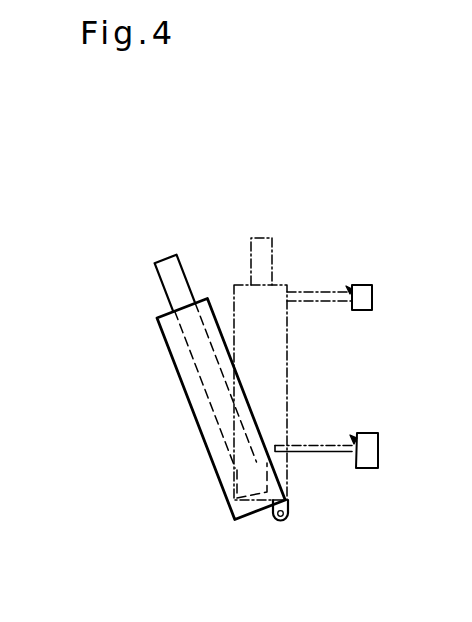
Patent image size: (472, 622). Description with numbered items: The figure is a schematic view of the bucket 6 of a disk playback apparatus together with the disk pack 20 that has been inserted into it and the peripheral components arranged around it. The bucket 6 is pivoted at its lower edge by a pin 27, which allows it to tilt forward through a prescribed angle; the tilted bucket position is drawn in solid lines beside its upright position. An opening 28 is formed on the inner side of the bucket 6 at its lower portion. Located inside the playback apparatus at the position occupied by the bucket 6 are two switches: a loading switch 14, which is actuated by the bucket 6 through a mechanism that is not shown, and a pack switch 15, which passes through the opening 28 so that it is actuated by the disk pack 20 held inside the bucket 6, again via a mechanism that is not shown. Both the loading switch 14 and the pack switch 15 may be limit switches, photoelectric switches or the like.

The bucket 6 is at (180, 377).
The disk pack 20 is at (164, 288).
The opening 28 is at (257, 461).
The pin 27 is at (277, 523).
The loading switch 14 is at (372, 298).
The pack switch 15 is at (378, 448).